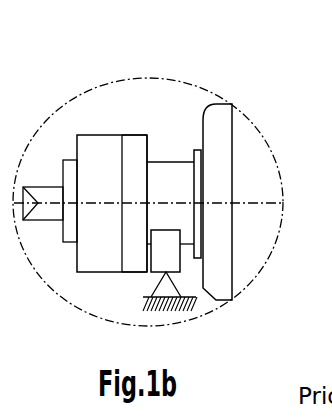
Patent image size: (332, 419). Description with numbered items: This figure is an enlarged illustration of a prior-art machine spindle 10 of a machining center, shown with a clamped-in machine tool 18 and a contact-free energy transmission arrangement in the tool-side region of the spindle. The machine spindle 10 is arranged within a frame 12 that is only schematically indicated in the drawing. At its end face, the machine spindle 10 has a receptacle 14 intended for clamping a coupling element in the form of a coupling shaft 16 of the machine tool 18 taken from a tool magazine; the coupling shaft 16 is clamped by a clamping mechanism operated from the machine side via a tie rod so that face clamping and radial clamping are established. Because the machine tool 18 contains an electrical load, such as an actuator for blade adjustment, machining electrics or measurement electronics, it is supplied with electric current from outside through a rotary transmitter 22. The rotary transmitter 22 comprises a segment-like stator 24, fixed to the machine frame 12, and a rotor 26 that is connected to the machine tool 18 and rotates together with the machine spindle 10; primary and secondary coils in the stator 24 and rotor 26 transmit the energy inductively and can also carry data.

The machine spindle 10 is at (250, 157).
The frame 12 is at (165, 288).
The receptacle 14 is at (221, 178).
The coupling shaft 16 is at (173, 177).
The machine tool 18 is at (110, 177).
The rotary transmitter 22 is at (142, 278).
The stator 24 is at (166, 255).
The rotor 26 is at (135, 253).